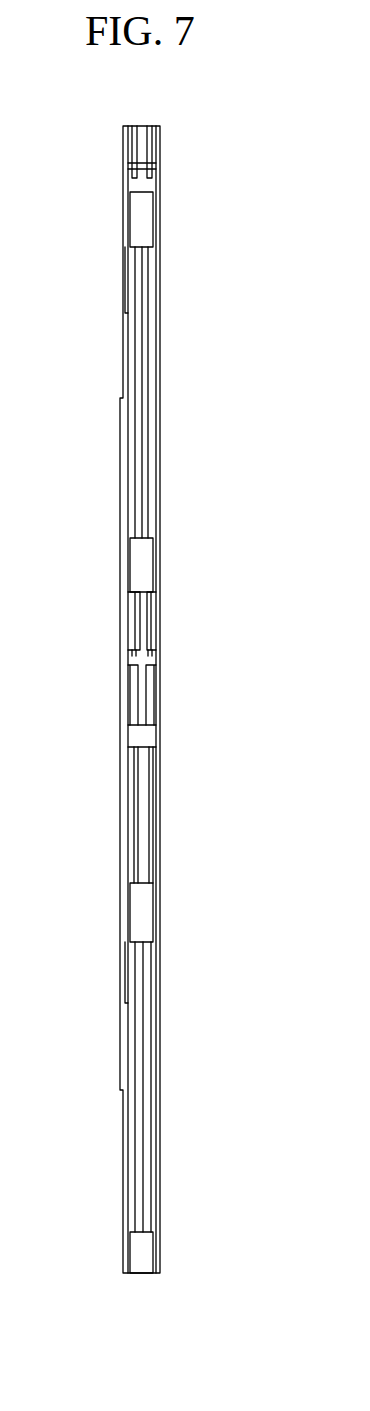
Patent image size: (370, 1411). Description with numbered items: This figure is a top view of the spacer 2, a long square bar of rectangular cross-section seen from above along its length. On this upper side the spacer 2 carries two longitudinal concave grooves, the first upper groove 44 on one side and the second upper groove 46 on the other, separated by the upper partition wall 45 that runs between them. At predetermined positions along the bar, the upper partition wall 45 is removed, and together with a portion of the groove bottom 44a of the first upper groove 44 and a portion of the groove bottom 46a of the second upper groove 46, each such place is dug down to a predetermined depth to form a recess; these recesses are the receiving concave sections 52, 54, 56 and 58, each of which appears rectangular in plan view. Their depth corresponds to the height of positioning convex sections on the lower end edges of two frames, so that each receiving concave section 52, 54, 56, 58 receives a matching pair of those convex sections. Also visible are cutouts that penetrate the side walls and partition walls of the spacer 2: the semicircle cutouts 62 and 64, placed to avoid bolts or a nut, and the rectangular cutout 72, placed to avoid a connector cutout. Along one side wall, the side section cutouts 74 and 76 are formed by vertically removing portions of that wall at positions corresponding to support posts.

The spacer 2 is at (185, 121).
The first upper groove 44 is at (137, 803).
The groove bottom of the first upper groove 44a is at (128, 619).
The upper partition wall 45 is at (143, 361).
The second upper groove 46 is at (148, 822).
The groove bottom of the second upper groove 46a is at (152, 620).
The receiving concave section 52 is at (130, 213).
The receiving concave section 54 is at (130, 554).
The receiving concave section 56 is at (130, 906).
The receiving concave section 58 is at (130, 1244).
The semicircle cutout 62 is at (160, 166).
The semicircle cutout 64 is at (157, 662).
The rectangular cutout 72 is at (157, 735).
The side section cutout 74 is at (127, 316).
The side section cutout 76 is at (127, 1003).